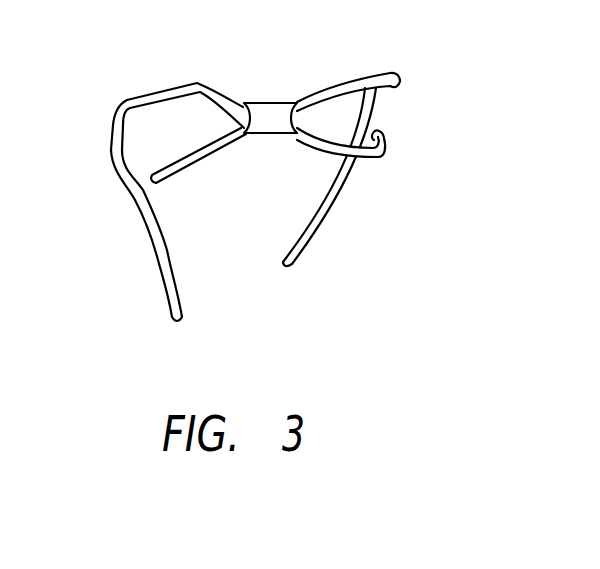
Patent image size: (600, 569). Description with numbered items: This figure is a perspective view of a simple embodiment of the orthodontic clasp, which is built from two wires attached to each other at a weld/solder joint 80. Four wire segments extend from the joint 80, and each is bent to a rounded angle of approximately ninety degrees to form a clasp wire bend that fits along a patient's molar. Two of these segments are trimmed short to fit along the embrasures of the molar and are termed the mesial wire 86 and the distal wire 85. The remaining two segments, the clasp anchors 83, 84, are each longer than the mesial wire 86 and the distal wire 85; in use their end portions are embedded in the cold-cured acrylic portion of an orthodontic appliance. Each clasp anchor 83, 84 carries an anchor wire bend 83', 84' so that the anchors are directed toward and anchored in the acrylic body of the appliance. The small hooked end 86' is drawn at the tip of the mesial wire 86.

The joint 80 is at (271, 103).
The clasp anchor 83 is at (349, 185).
The anchor wire bend 83' is at (394, 79).
The clasp anchor 84 is at (126, 235).
The anchor wire bend 84' is at (147, 106).
The distal wire 85 is at (200, 162).
The mesial wire 86 is at (305, 159).
The hook 86' is at (417, 160).